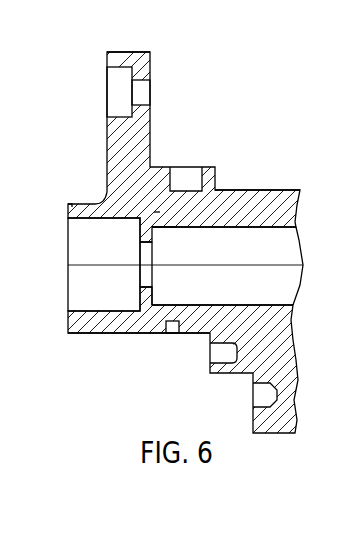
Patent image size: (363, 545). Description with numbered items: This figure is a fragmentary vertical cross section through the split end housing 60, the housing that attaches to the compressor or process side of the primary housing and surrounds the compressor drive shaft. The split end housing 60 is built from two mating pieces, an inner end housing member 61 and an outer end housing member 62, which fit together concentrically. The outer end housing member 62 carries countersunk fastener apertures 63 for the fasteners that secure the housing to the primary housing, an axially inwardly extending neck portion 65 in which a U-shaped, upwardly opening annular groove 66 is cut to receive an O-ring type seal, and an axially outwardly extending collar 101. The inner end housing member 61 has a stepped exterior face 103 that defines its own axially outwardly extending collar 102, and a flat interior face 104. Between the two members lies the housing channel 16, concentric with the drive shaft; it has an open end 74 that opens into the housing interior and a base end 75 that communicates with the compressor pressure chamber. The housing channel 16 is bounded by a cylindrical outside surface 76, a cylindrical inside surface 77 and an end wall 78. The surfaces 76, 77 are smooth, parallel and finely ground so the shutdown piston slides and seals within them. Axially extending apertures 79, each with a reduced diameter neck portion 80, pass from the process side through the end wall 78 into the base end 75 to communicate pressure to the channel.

The split end housing 60 is at (184, 58).
The inner end housing member 61 is at (53, 339).
The outer end housing member 62 is at (98, 45).
The countersunk fastener apertures 63 is at (113, 92).
The housing channel 16 is at (156, 212).
The annular groove 66 is at (181, 186).
The neck portion 65 is at (263, 192).
The base end 75 is at (160, 216).
The collar 101 is at (70, 203).
The apertures 79 is at (73, 244).
The reduced diameter neck portions 80 is at (143, 271).
The end wall 78 is at (216, 330).
The cylindrical outside surface 76 is at (277, 227).
The open end 74 is at (295, 271).
The cylindrical inside surface 77 is at (291, 296).
The collar 102 is at (107, 323).
The stepped exterior face 103 is at (210, 372).
The flat interior face 104 is at (253, 424).